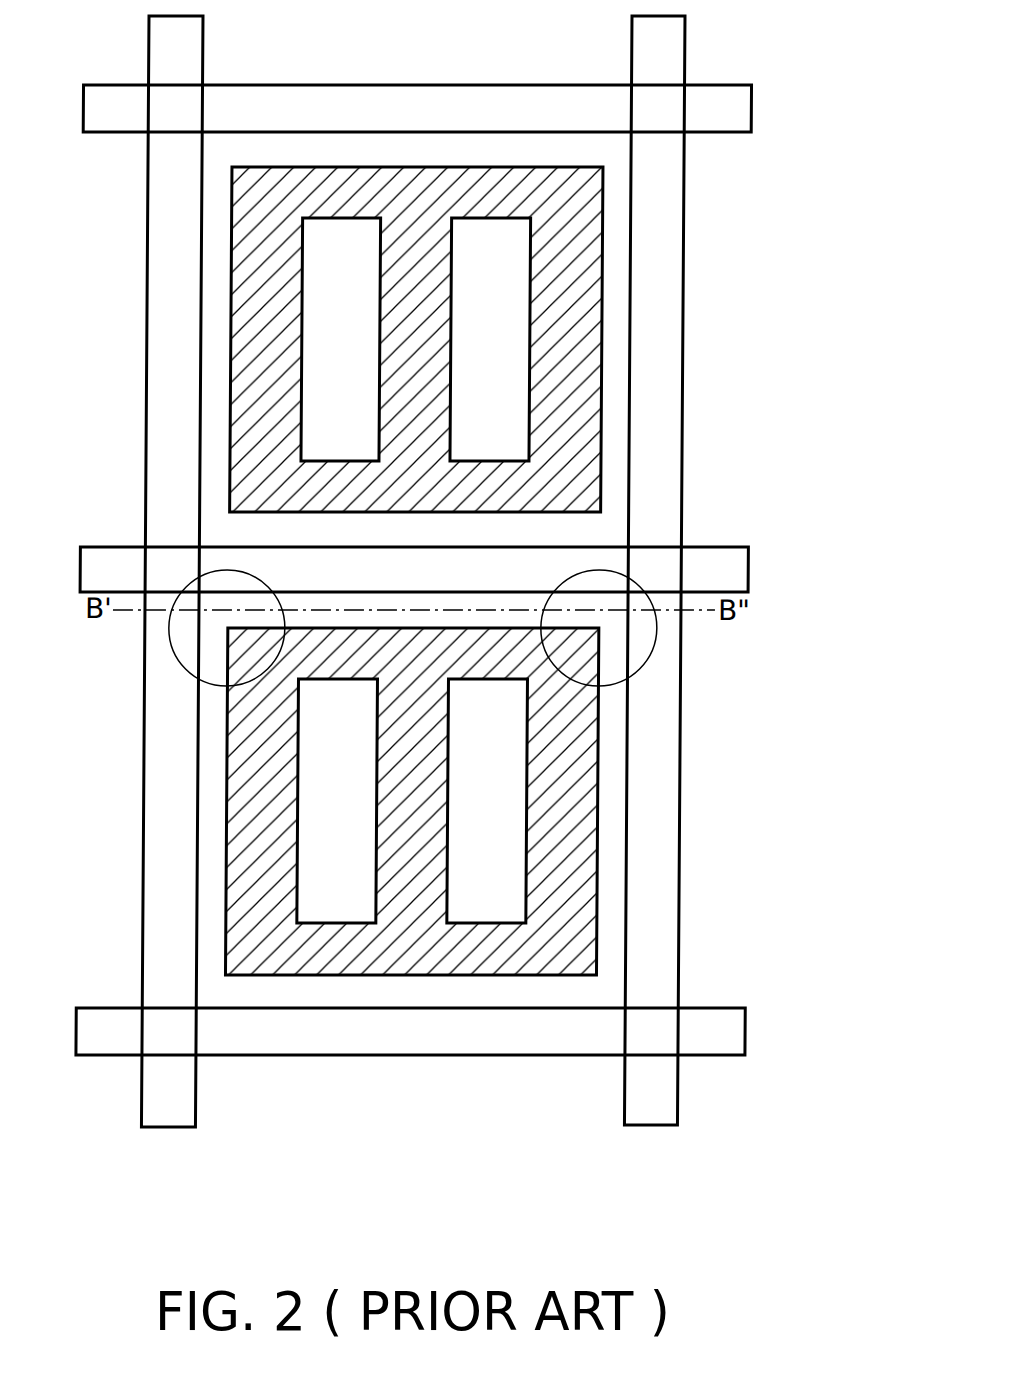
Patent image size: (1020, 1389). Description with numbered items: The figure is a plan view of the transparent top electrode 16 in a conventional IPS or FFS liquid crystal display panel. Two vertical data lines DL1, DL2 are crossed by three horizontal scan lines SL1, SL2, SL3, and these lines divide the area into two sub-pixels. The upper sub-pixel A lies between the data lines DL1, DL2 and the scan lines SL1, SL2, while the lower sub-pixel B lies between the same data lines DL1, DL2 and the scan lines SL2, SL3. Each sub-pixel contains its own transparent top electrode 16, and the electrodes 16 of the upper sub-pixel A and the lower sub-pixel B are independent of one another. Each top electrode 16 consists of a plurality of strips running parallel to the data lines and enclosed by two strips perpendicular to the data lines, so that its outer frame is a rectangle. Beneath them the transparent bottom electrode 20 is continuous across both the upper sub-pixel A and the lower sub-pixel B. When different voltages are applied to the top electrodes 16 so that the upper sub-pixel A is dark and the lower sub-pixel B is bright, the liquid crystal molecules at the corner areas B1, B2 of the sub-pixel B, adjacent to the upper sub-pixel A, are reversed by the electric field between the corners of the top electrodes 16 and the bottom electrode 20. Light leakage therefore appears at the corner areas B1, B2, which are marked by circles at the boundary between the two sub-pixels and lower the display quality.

The transparent top electrode 16 is at (604, 321).
The transparent bottom electrode 20 is at (512, 375).
The scan line SL1 is at (773, 114).
The scan line SL2 is at (777, 575).
The scan line SL3 is at (780, 1038).
The data line DL1 is at (181, 1148).
The data line DL2 is at (665, 1148).
The upper sub-pixel A is at (382, 335).
The lower sub-pixel B is at (50, 592).
The corner area B1 is at (172, 628).
The corner area B2 is at (662, 627).